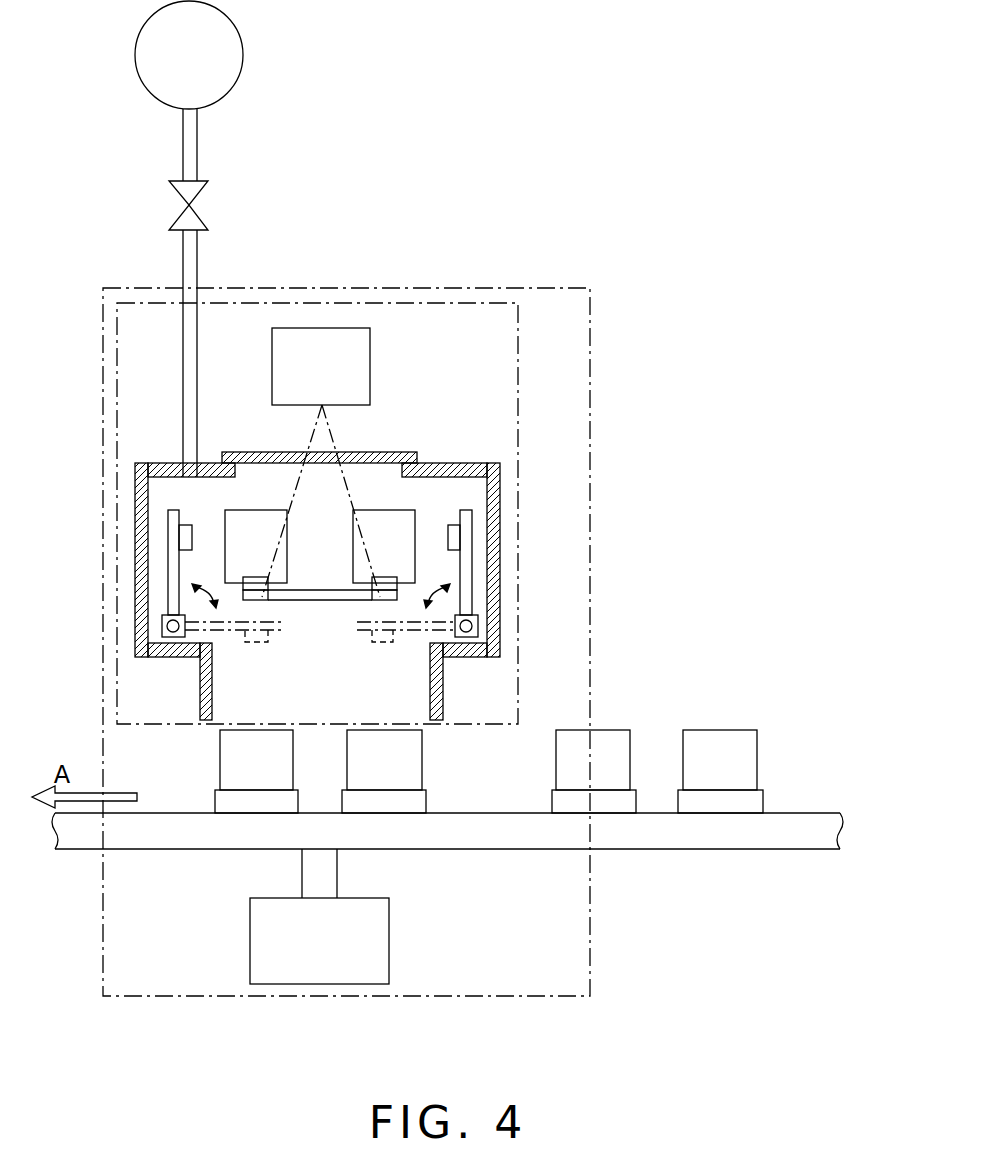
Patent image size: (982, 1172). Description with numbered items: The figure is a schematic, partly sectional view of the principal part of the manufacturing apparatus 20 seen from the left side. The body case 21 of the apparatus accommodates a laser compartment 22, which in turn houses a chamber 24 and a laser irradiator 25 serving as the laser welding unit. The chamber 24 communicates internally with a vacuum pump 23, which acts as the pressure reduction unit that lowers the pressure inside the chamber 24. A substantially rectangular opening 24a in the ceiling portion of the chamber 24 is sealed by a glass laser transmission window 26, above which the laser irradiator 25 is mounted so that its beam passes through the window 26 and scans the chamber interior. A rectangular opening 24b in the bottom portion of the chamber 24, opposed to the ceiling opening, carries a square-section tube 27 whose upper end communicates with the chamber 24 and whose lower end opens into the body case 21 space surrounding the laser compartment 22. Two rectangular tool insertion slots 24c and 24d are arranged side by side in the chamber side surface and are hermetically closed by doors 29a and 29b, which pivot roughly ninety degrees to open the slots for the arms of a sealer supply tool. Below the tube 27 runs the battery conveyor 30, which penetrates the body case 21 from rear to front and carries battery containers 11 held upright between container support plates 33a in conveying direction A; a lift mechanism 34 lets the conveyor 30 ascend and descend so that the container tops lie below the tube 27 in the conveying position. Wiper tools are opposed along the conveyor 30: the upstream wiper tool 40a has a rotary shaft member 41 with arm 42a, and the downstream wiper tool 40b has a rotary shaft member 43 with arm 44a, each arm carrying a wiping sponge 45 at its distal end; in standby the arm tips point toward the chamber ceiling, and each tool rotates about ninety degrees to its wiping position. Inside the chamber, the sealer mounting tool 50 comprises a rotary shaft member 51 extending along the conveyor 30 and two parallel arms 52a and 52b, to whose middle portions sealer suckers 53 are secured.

The battery container 11 is at (220, 759).
The manufacturing apparatus 20 is at (500, 238).
The body case 21 is at (590, 322).
The laser compartment 22 is at (418, 303).
The vacuum pump 23 is at (243, 55).
The chamber 24 is at (317, 560).
The opening 24a is at (403, 474).
The opening 24b is at (198, 660).
The tool insertion slot 24c is at (362, 510).
The tool insertion slot 24d is at (255, 510).
The laser irradiator 25 is at (370, 365).
The laser transmission window 26 is at (398, 452).
The tube 27 is at (443, 684).
The door 29a is at (353, 568).
The door 29b is at (287, 523).
The battery conveyor 30 is at (718, 849).
The container support plate 33a is at (215, 798).
The lift mechanism 34 is at (389, 938).
The upstream wiper tool 40a is at (485, 555).
The downstream wiper tool 40b is at (160, 558).
The rotary shaft member 41 is at (478, 627).
The arm 42a is at (466, 585).
The rotary shaft member 43 is at (162, 628).
The arm 44a is at (173, 585).
The wiping sponge 45 is at (185, 525).
The sealer mounting tool 50 is at (311, 620).
The rotary shaft member 51 is at (338, 601).
The arm 52a is at (383, 600).
The arm 52b is at (258, 600).
The sealer sucker 53 is at (246, 580).